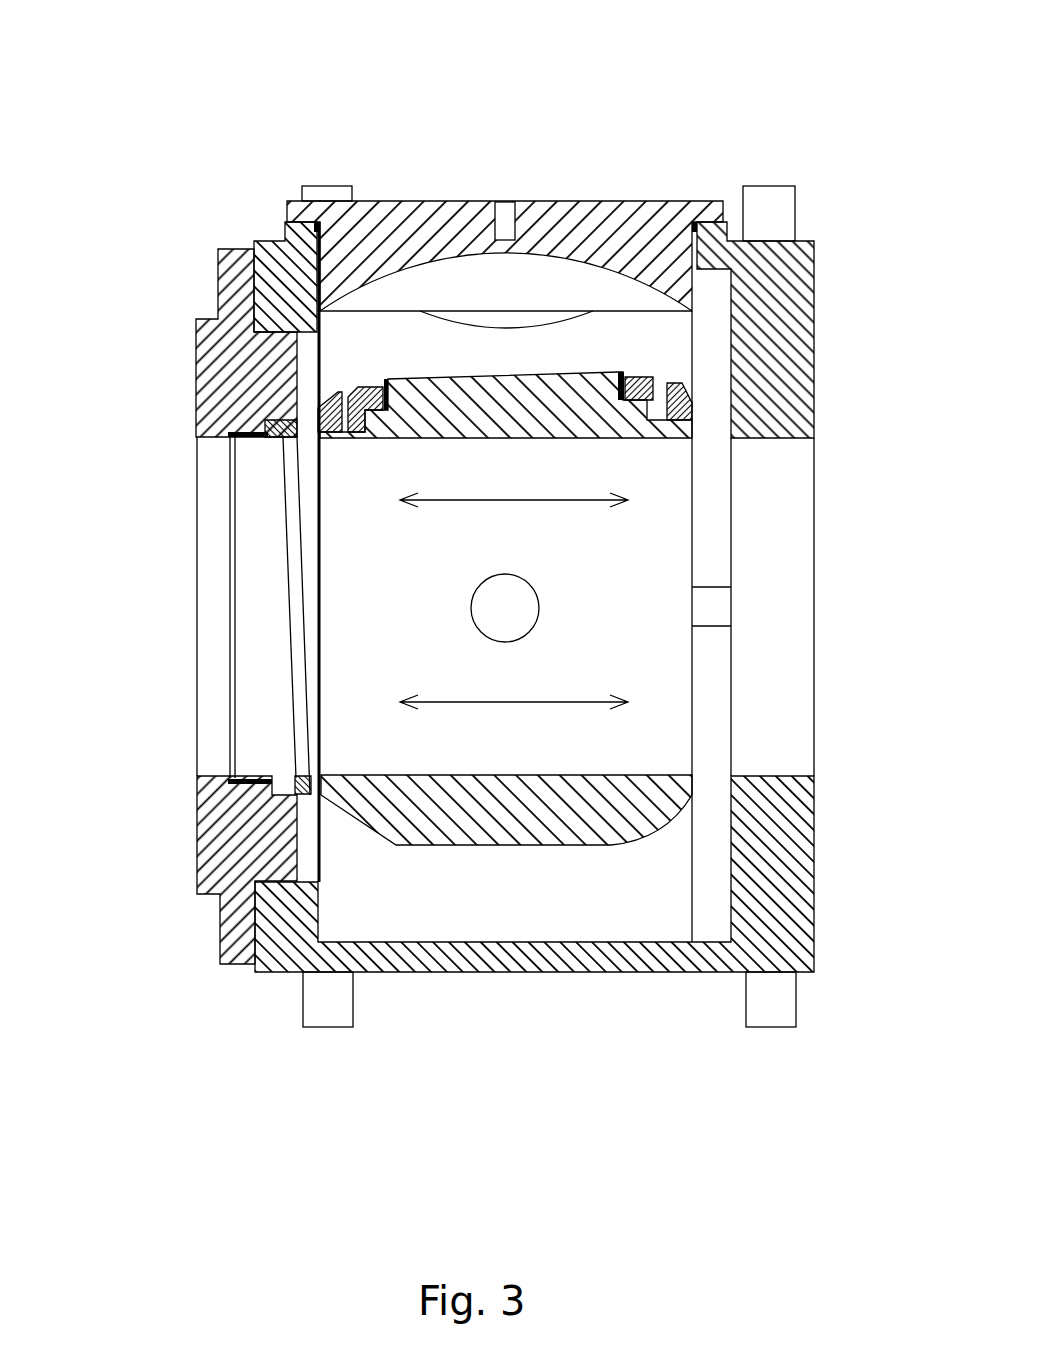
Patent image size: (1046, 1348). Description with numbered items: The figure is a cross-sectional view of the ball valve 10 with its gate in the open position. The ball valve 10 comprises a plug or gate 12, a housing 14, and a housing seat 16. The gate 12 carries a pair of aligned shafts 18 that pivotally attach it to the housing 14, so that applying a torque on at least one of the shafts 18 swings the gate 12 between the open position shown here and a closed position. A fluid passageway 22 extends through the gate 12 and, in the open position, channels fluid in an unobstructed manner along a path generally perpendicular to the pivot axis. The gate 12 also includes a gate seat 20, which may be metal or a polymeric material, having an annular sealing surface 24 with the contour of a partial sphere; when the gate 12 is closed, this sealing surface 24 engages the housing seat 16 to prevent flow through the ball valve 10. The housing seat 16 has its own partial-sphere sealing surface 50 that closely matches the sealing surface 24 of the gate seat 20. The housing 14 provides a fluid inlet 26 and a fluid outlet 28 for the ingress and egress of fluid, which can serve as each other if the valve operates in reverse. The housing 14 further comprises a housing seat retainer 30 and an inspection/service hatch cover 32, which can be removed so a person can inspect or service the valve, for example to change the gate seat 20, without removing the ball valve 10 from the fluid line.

The ball valve 10 is at (257, 90).
The gate 12 is at (657, 542).
The housing 14 is at (667, 916).
The housing seat 16 is at (258, 492).
The shafts 18 is at (518, 615).
The gate seat 20 is at (690, 403).
The fluid passageway 22 is at (505, 497).
The annular sealing surface 24 is at (328, 410).
The fluid inlet 26 is at (235, 620).
The fluid outlet 28 is at (771, 610).
The housing seat retainer 30 is at (223, 846).
The inspection/service hatch cover 32 is at (613, 215).
The sealing surface 50 is at (302, 720).